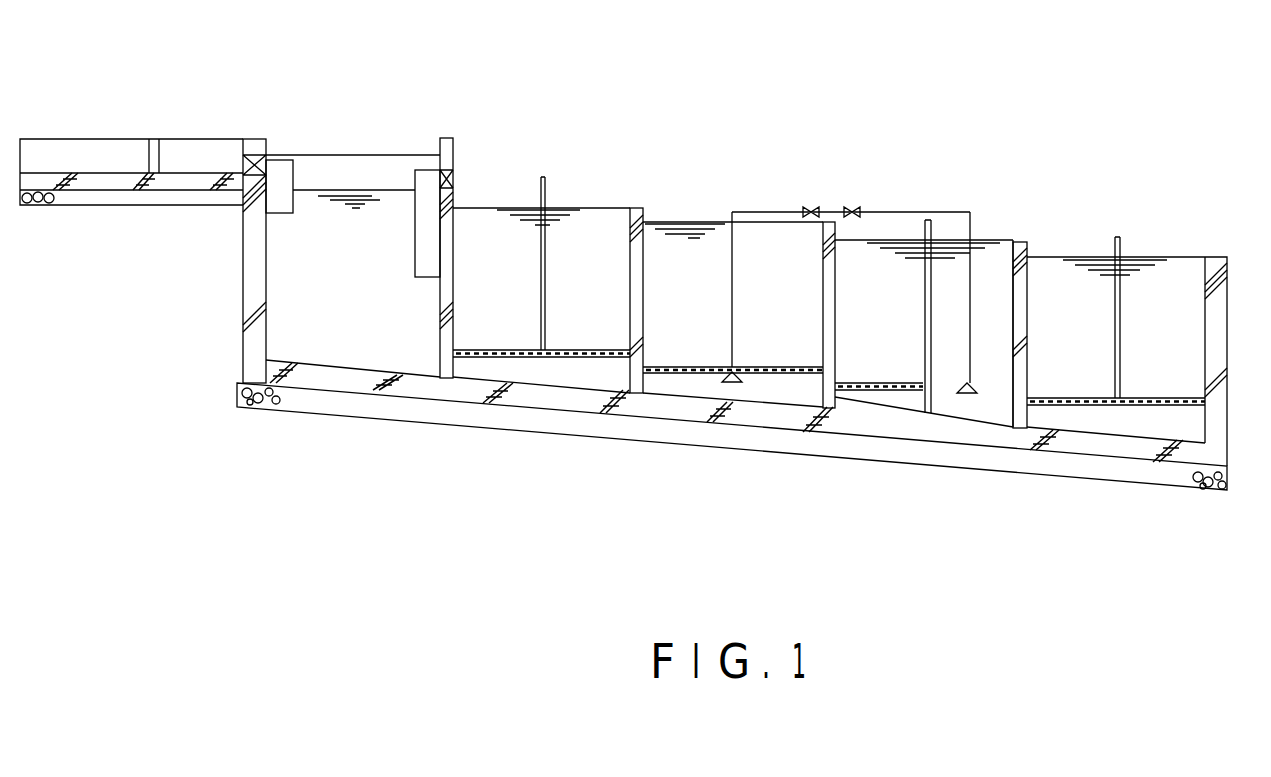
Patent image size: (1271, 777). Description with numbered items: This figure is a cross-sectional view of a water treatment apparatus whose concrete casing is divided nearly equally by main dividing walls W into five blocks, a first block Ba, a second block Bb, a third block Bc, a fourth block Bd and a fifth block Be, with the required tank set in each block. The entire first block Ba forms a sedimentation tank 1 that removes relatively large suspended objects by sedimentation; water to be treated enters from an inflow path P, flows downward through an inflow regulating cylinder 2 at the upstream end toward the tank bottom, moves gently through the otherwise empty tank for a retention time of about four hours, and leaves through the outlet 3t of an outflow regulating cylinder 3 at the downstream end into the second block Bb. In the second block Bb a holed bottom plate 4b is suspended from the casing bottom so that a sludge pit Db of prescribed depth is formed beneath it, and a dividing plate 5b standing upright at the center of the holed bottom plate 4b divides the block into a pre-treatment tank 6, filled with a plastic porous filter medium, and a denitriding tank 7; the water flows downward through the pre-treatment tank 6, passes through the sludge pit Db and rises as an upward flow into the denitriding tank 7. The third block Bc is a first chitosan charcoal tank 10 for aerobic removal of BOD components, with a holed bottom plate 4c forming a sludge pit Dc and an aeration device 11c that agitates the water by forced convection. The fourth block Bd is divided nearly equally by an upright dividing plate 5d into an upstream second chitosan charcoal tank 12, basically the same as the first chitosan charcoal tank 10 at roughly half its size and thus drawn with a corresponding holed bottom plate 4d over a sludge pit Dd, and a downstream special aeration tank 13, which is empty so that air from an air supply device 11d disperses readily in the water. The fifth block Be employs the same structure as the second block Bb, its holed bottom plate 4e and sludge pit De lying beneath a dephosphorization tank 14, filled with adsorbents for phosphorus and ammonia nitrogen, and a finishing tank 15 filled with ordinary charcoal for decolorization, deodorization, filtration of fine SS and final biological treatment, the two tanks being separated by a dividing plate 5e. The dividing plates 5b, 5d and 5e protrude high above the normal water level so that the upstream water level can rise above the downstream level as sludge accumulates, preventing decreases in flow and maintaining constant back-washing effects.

The inflow path P is at (127, 142).
The inflow regulating cylinder 2 is at (277, 207).
The sedimentation tank 1 is at (317, 345).
The first block Ba is at (360, 132).
The outflow regulating cylinder 3 is at (418, 260).
The outlet 3t is at (457, 187).
The main dividing walls W is at (456, 150).
The second block Bb is at (576, 188).
The dividing plate 5b is at (543, 176).
The holed bottom plate 4b is at (510, 358).
The sludge pit Db is at (565, 372).
The pre-treatment tank 6 is at (480, 335).
The denitriding tank 7 is at (604, 331).
The third block Bc is at (722, 197).
The first chitosan charcoal tank 10 is at (683, 242).
The holed bottom plate 4c is at (673, 370).
The aeration device 11c is at (731, 384).
The sludge pit Dc is at (790, 390).
The fourth block Bd is at (945, 225).
The dividing plate 5d is at (927, 213).
The second chitosan charcoal tank 12 is at (883, 257).
The filter plate 4d is at (860, 387).
The drain space Dd is at (900, 403).
The air supply device 11d is at (965, 395).
The special aeration tank 13 is at (997, 403).
The fifth block Be is at (1150, 232).
The dividing plate 5e is at (1116, 240).
The dephosphorization tank 14 is at (1072, 270).
The finishing tank 15 is at (1178, 265).
The filter plate 4e is at (1060, 403).
The drain space De is at (1125, 418).